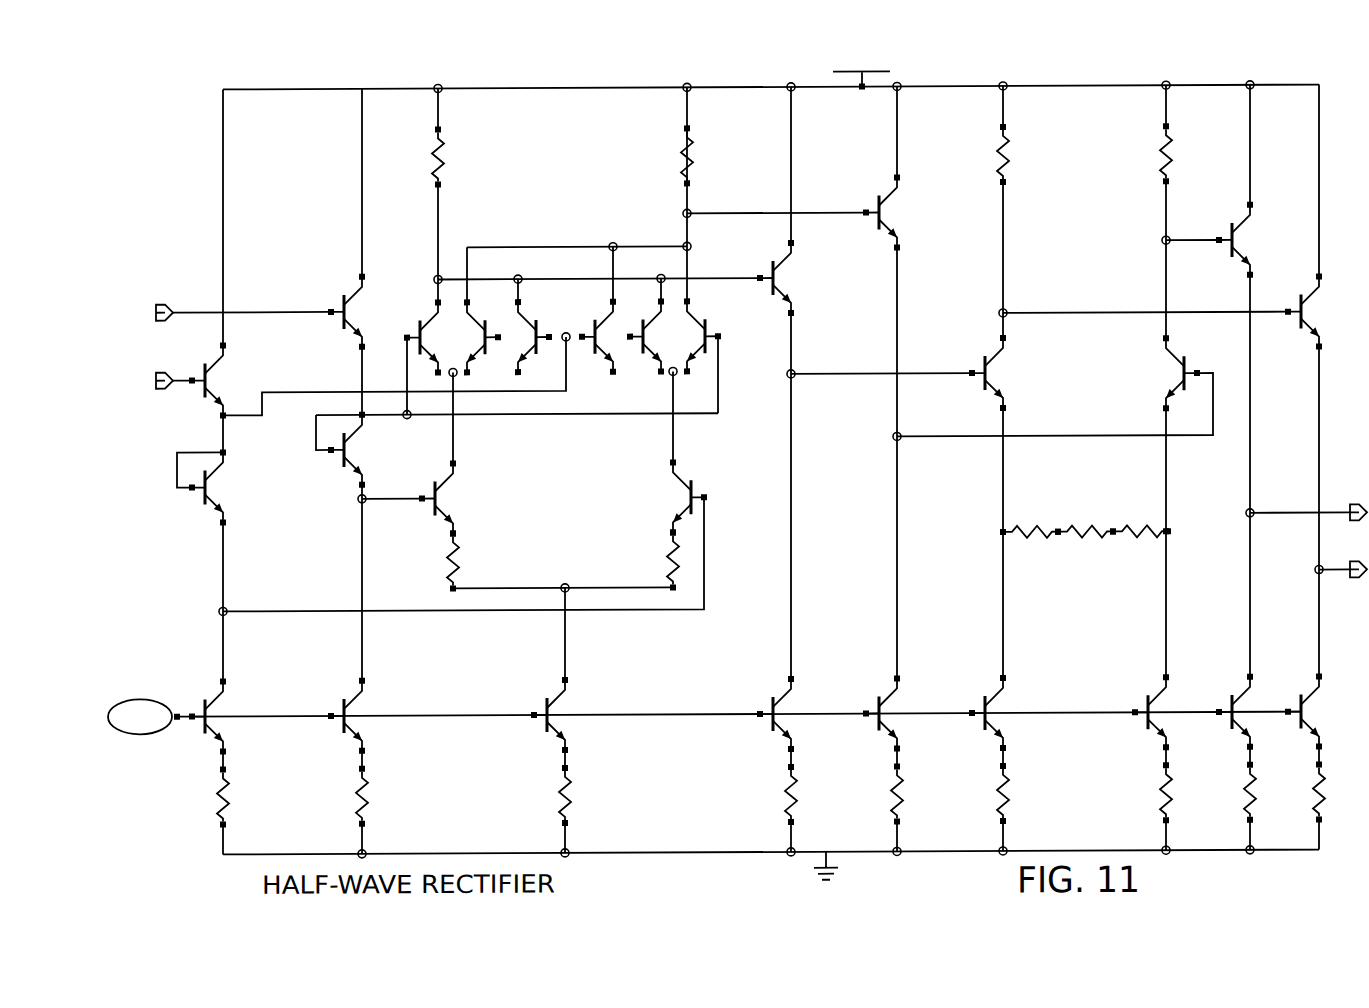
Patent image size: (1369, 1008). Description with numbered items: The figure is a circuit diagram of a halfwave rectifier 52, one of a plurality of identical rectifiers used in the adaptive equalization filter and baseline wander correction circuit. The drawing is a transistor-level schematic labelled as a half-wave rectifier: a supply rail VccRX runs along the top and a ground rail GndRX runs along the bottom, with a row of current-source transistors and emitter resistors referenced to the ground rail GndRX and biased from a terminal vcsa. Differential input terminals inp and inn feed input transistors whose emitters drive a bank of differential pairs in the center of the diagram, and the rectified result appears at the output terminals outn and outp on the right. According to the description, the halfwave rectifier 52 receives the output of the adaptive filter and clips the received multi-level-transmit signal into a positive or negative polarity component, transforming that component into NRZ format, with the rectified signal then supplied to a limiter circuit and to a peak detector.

The halfwave rectifier 52 is at (542, 516).
The positive input terminal inp is at (228, 320).
The negative input terminal inn is at (158, 379).
The current source bias terminal vcsa is at (144, 717).
The negative output terminal outn is at (1306, 528).
The positive output terminal outp is at (1341, 583).
The receiver supply voltage VccRX is at (861, 60).
The receiver ground GndRX is at (838, 877).